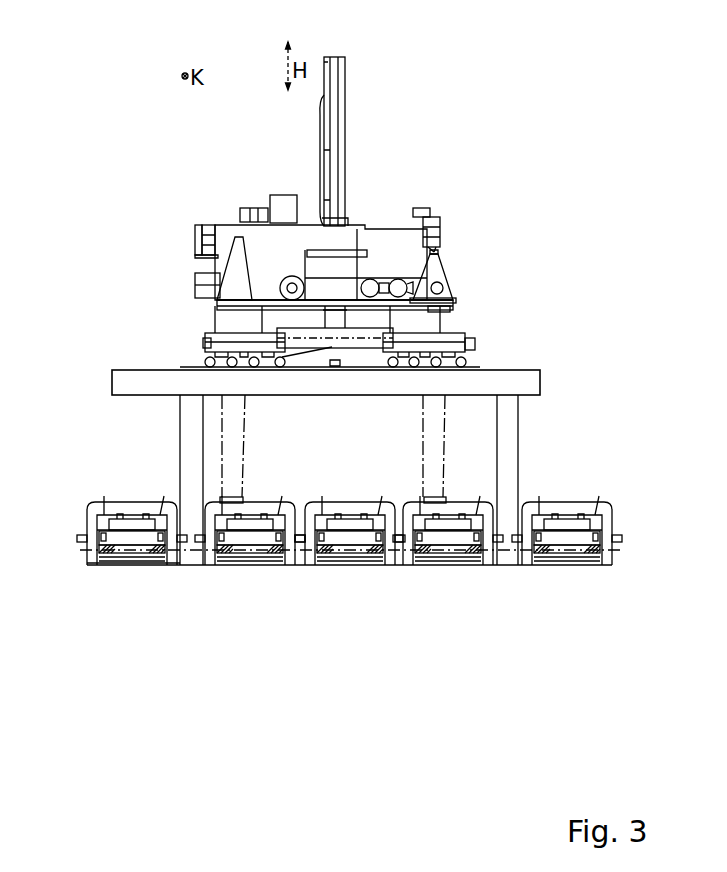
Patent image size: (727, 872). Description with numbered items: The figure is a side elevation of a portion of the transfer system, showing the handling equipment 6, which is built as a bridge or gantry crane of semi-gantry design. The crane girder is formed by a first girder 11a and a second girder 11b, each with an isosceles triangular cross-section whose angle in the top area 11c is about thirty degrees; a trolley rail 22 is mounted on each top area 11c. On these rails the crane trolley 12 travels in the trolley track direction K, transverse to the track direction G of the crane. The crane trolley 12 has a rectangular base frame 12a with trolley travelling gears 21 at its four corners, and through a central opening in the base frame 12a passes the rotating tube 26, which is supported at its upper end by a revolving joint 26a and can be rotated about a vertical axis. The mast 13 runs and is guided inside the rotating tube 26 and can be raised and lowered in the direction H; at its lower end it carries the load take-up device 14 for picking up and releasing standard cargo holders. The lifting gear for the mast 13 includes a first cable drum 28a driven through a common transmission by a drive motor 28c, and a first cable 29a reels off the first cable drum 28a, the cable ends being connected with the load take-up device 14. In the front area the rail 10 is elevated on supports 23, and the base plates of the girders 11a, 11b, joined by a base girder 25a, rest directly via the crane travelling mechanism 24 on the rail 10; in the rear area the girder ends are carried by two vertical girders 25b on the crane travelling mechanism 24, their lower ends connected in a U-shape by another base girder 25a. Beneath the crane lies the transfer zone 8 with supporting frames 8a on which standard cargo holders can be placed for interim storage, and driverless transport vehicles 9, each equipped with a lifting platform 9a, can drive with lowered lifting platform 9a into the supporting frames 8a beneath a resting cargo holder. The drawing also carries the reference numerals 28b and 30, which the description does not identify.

The handling equipment 6 is at (464, 93).
The mast 13 is at (345, 93).
The base frame 12a is at (193, 223).
The trolley rail 22 is at (193, 256).
The second girder 11b is at (193, 278).
The base girder 25a is at (258, 318).
The crane travelling mechanism 24 is at (207, 342).
The control box 30 is at (275, 262).
The first cable 29a is at (307, 277).
The rotating tube 26 is at (345, 256).
The revolving joint 26a is at (425, 210).
The crane trolley 12 is at (430, 218).
The trolley travelling gears 21 is at (438, 237).
The top area 11c is at (438, 250).
The first girder 11a is at (430, 273).
The roller 28b is at (443, 287).
The first cable drum 28a is at (440, 300).
The drive motor 28c is at (445, 310).
The load take-up device 14 is at (470, 341).
The rails 10 is at (538, 368).
The supports 23 is at (192, 407).
The vertical girders 25b is at (230, 467).
The transfer zone 8 is at (300, 465).
The lifting platform 9a is at (133, 525).
The driverless transport vehicles 9 is at (133, 540).
The supporting frames 8a is at (177, 563).